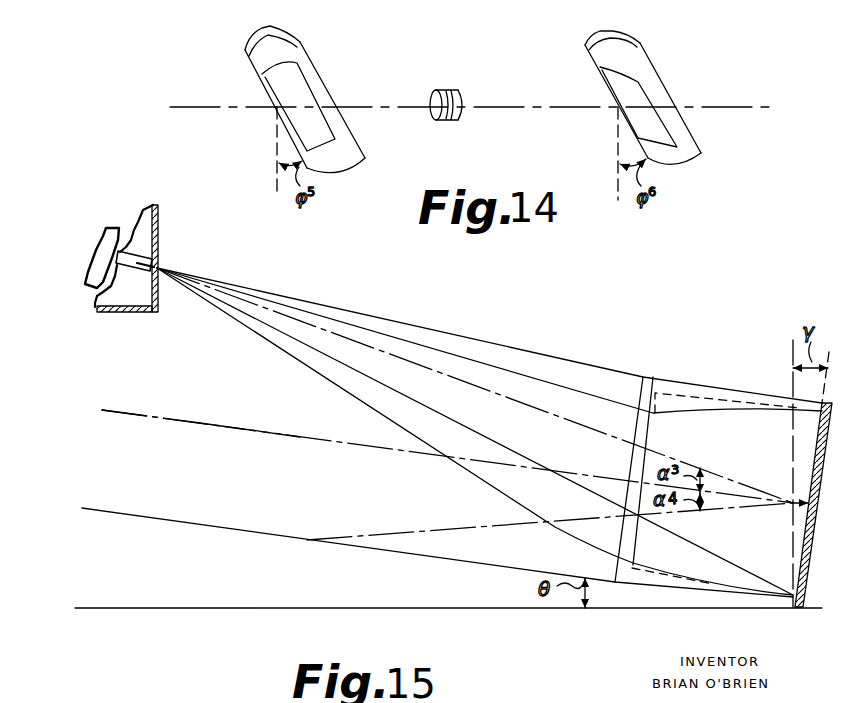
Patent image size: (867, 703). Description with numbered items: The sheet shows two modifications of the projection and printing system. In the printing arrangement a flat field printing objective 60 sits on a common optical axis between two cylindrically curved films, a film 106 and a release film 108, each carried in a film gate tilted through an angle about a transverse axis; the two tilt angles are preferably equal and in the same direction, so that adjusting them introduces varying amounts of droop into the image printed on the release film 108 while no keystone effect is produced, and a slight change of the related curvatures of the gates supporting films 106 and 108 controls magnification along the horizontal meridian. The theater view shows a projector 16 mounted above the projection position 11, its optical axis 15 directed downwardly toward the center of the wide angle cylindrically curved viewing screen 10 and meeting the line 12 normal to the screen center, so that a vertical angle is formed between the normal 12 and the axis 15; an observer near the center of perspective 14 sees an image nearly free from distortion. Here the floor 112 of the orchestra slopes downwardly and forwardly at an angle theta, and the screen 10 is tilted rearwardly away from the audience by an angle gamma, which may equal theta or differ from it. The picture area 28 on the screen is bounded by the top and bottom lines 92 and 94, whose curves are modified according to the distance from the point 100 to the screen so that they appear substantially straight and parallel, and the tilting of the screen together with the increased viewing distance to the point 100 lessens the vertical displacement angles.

In FIG. 14, the film 106 is at (297, 58).
In FIG. 14, the release film 108 is at (635, 58).
In FIG. 14, the flat field printing objective 60 is at (443, 88).
In FIG. 15, the projector 16 is at (108, 232).
In FIG. 15, the optical axis 15 is at (386, 353).
In FIG. 15, the center of perspective 14 is at (467, 460).
In FIG. 15, the projection position 11 is at (133, 412).
In FIG. 15, the line normal to the center of the screen 12 is at (189, 424).
In FIG. 15, the floor 112 is at (153, 518).
In FIG. 15, the point 100 is at (307, 540).
In FIG. 15, the top line 92 is at (677, 392).
In FIG. 15, the lens 28 is at (690, 422).
In FIG. 15, the viewing screen 10 is at (738, 386).
In FIG. 15, the bottom line 94 is at (654, 568).